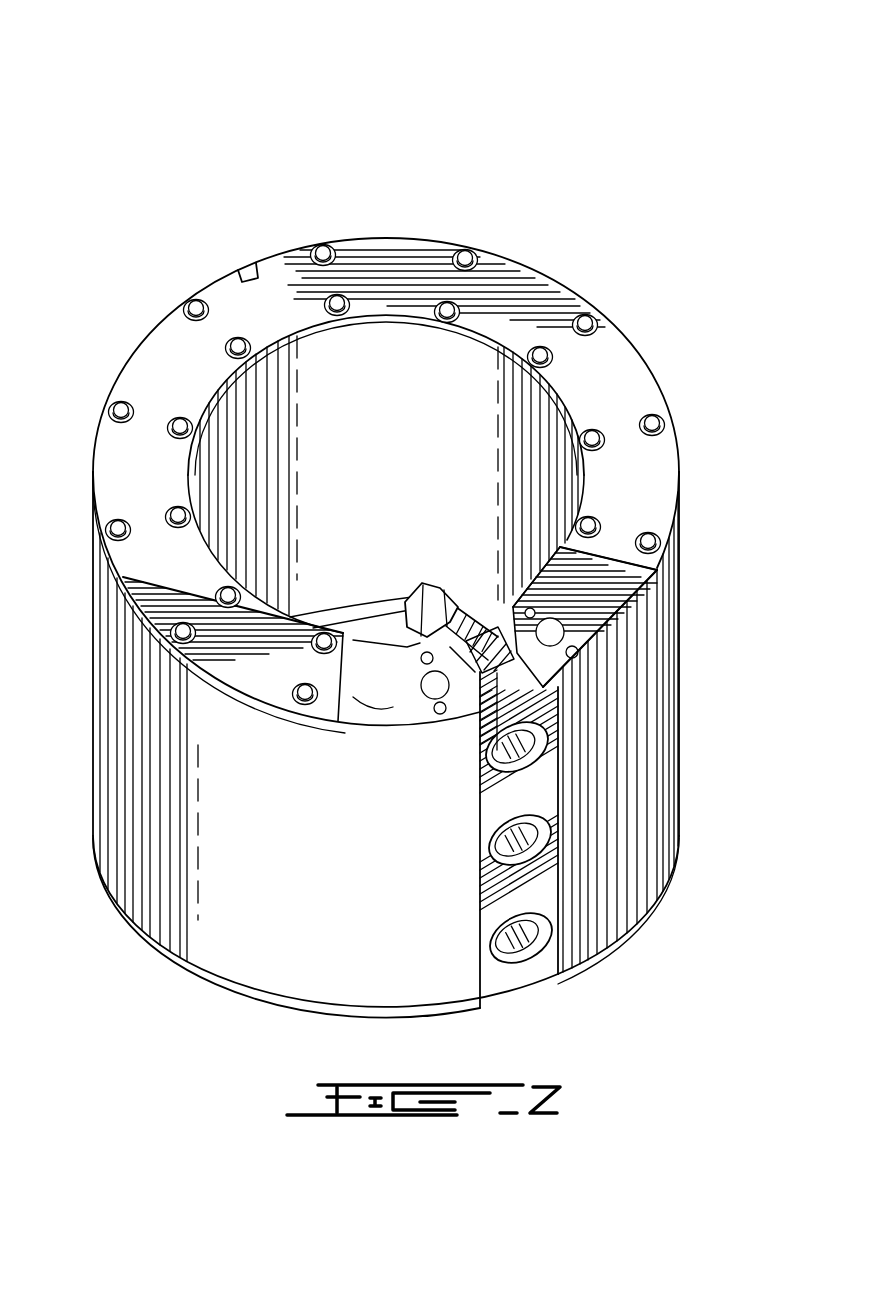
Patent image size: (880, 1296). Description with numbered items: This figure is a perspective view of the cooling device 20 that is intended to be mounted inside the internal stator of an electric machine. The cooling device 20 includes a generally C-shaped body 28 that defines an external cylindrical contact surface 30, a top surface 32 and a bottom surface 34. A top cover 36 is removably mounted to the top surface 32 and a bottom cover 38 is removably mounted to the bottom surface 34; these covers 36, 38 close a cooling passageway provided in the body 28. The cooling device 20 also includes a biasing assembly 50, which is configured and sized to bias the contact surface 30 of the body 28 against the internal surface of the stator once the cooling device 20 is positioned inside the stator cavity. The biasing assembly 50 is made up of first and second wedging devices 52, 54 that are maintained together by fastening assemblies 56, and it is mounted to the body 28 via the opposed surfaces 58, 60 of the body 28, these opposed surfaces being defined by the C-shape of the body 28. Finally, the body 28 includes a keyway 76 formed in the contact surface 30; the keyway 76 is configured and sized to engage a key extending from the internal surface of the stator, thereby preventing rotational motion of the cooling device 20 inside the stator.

The cooling device 20 is at (522, 178).
The body 28 is at (602, 590).
The external cylindrical contact surface 30 is at (645, 688).
The top surface 32 is at (343, 722).
The bottom surface 34 is at (228, 982).
The top cover 36 is at (163, 358).
The bottom cover 38 is at (277, 1004).
The biasing assembly 50 is at (545, 798).
The first wedging device 52 is at (555, 720).
The second wedging device 54 is at (489, 605).
The fastening assemblies 56 is at (404, 590).
The opposed surface 58 is at (518, 694).
The opposed surface 60 is at (565, 680).
The keyway 76 is at (250, 264).